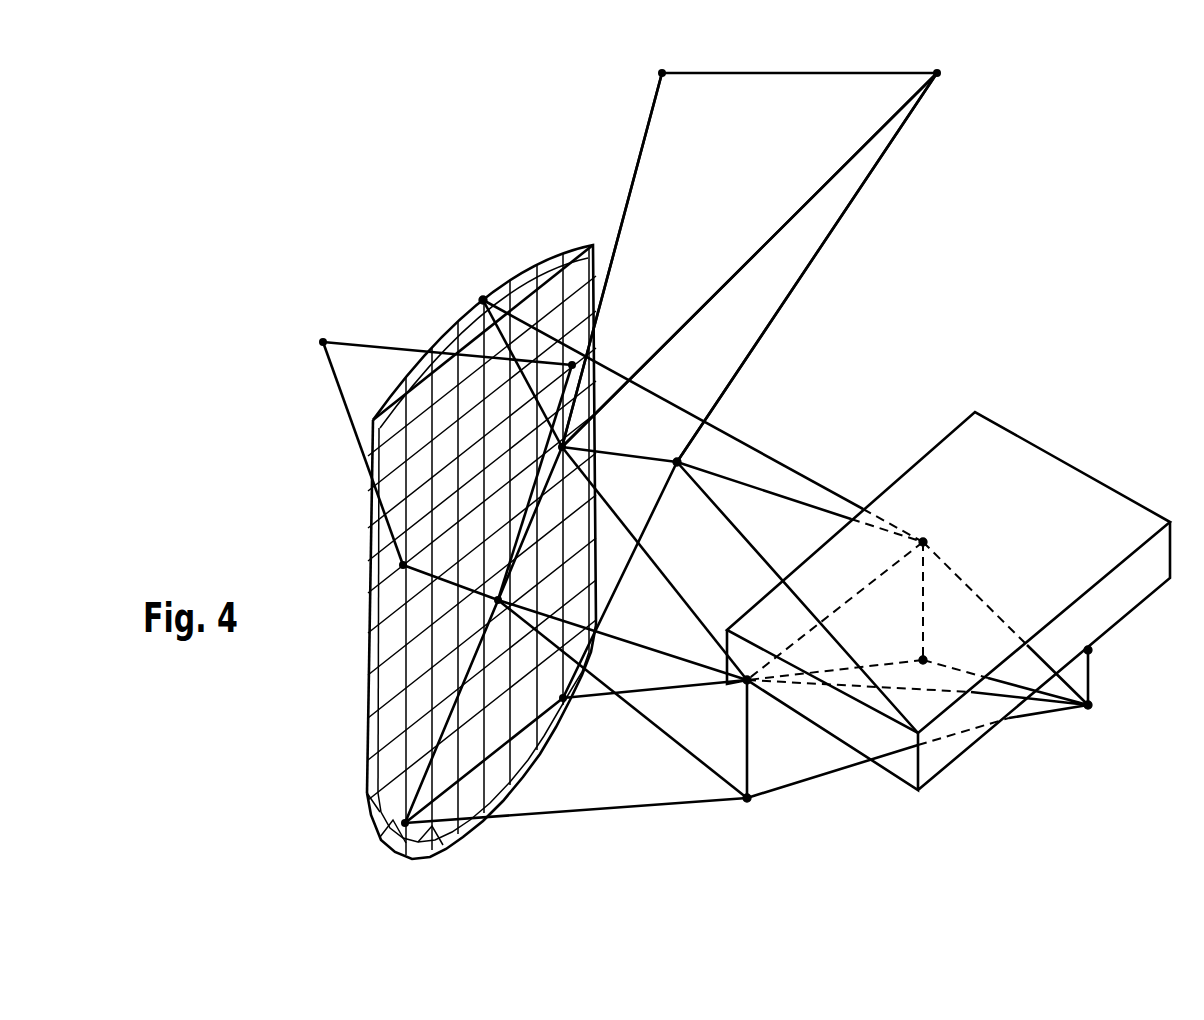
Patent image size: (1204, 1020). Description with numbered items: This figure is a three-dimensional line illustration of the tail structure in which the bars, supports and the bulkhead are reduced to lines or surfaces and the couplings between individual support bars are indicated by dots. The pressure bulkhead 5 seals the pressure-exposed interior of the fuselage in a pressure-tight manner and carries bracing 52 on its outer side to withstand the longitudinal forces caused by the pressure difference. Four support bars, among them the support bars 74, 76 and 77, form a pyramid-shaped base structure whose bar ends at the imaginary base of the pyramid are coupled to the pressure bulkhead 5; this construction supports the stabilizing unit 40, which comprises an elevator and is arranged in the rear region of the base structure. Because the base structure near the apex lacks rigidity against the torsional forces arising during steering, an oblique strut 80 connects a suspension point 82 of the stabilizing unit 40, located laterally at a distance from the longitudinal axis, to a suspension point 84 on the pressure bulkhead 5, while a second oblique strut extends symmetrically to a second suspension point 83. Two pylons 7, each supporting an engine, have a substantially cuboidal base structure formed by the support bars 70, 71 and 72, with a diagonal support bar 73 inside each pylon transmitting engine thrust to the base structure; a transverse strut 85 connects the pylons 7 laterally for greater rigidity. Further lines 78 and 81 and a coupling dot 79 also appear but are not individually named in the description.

The pressure bulkhead 5 is at (358, 745).
The pylon 7 is at (618, 131).
The stabilizing unit 40 is at (1062, 466).
The bracing 52 is at (388, 645).
The support bar 70 is at (845, 218).
The support bar 71 is at (762, 75).
The support bar 72 is at (640, 160).
The diagonal support bar 73 is at (783, 226).
The support bar 74 is at (804, 504).
The support bar 76 is at (606, 812).
The support bar 77 is at (440, 745).
The reflected light ray 78 is at (652, 722).
The detector corner point 79 is at (748, 763).
The oblique strut 80 is at (676, 566).
The reflected light ray 81 is at (745, 441).
The suspension point 82 is at (747, 678).
The second suspension point 83 is at (923, 540).
The suspension point 84 is at (484, 298).
The transverse strut 85 is at (668, 455).